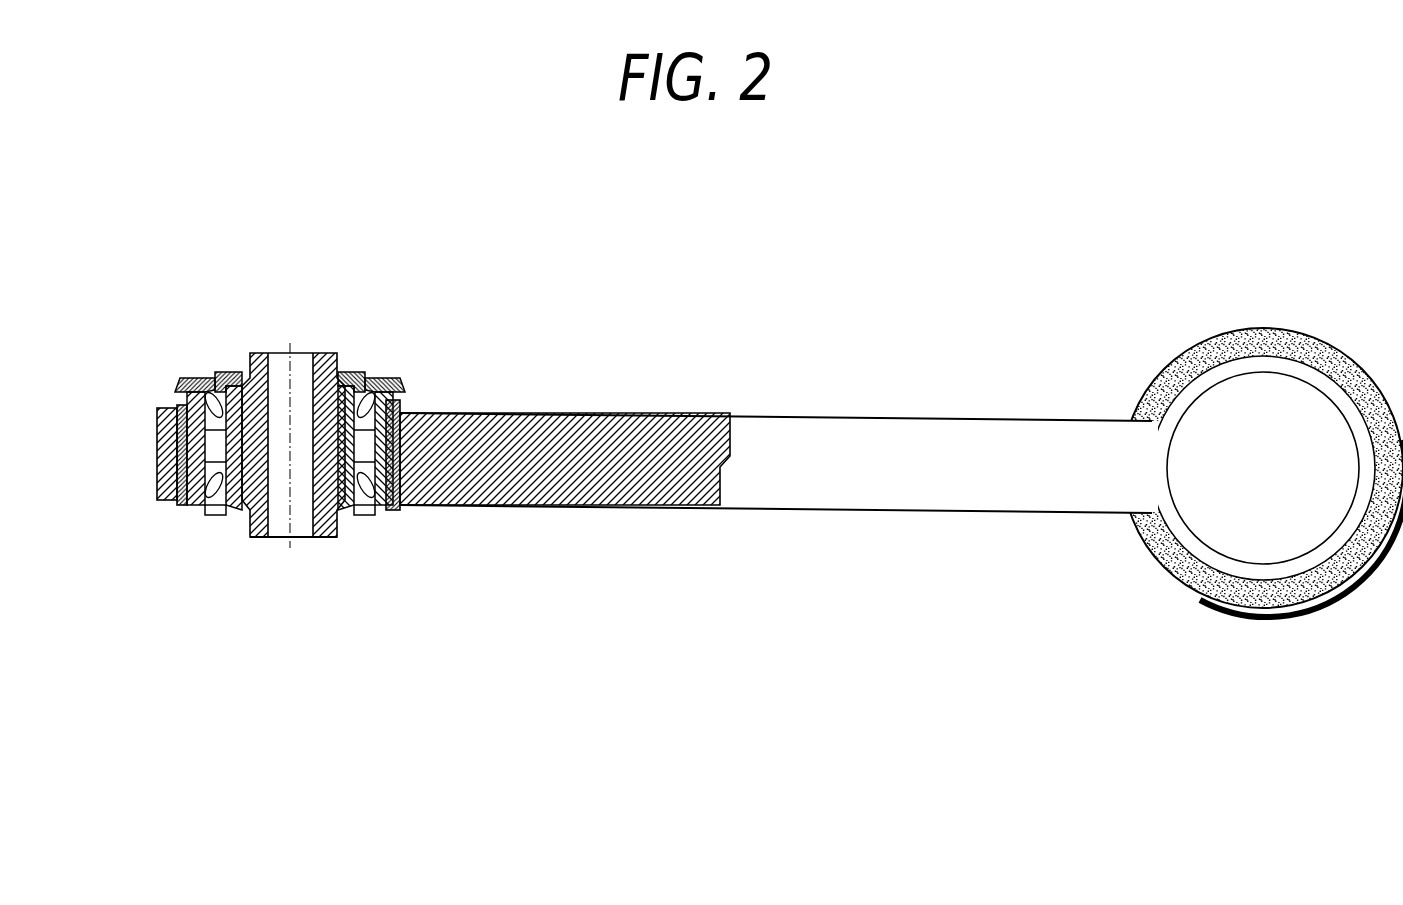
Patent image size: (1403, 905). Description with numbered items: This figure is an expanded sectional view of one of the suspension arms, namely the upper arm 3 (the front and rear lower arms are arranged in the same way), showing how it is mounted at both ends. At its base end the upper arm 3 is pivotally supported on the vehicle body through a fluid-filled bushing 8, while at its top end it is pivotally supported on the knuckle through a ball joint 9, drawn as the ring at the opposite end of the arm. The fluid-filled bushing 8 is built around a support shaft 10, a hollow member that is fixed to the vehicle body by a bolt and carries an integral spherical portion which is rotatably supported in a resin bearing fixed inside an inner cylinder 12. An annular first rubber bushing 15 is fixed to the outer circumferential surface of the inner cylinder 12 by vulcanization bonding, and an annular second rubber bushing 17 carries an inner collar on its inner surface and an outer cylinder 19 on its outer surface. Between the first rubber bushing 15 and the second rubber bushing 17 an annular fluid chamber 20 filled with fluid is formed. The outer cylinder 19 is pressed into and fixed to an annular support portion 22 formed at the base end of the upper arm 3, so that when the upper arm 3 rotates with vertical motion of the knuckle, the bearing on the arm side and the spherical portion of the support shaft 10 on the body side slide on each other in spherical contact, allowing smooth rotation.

The upper arm 3 is at (621, 382).
The fluid-filled bushing 8 is at (321, 343).
The ball joint 9 is at (1276, 312).
The support shaft 10 is at (320, 540).
The inner cylinder 12 is at (222, 385).
The first rubber bushing 15 is at (198, 508).
The second rubber bushing 17 is at (177, 383).
The outer cylinder 19 is at (180, 503).
The fluid chamber 20 is at (157, 440).
The annular support portion 22 is at (157, 470).